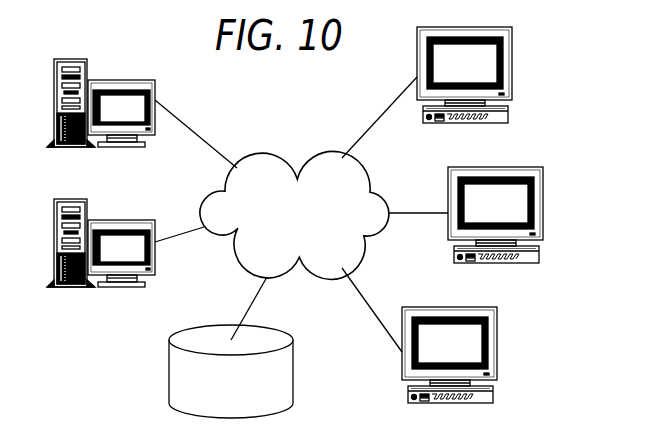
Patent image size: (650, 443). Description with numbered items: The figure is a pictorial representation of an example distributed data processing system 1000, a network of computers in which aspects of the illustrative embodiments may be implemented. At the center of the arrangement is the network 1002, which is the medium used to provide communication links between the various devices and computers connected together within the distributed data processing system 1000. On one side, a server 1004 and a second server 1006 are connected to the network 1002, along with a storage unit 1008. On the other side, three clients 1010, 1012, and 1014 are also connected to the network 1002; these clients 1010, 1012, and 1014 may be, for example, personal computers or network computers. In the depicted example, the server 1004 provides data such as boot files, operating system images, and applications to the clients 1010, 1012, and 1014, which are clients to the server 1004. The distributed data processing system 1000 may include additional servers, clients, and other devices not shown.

The distributed data processing system 1000 is at (125, 357).
The network 1002 is at (265, 153).
The server 1004 is at (122, 80).
The server 1006 is at (122, 220).
The storage unit 1008 is at (293, 360).
The client 1010 is at (512, 68).
The client 1012 is at (543, 207).
The client 1014 is at (497, 348).